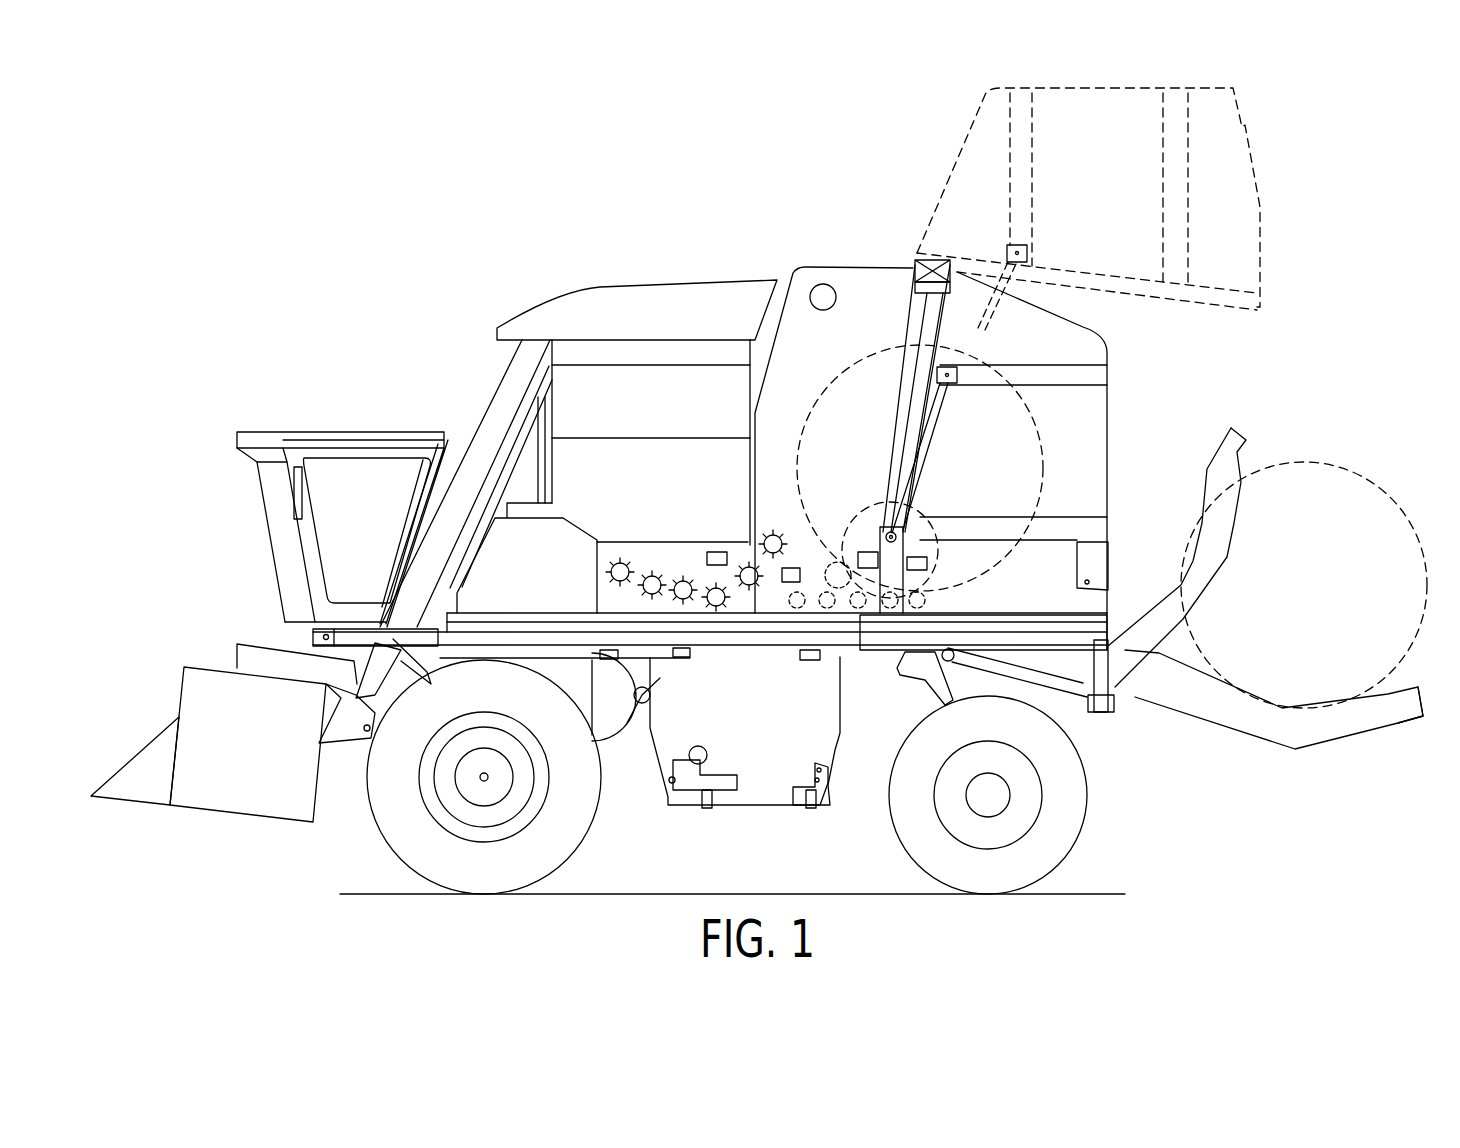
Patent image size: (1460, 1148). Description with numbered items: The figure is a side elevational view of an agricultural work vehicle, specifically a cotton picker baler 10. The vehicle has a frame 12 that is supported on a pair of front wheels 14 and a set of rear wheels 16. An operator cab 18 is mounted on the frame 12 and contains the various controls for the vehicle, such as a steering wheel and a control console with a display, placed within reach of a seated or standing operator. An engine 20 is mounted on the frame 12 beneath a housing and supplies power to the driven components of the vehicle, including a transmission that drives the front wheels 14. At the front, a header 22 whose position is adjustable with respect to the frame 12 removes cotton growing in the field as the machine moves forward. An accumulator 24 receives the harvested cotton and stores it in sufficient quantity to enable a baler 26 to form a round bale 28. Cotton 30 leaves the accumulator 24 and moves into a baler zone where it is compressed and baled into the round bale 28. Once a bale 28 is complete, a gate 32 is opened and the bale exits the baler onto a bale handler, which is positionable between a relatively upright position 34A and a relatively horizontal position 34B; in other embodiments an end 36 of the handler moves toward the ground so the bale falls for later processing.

The cotton picker baler 10 is at (246, 258).
The frame 12 is at (1017, 635).
The front wheels 14 is at (482, 875).
The rear wheels 16 is at (990, 875).
The operator cab 18 is at (268, 428).
The engine 20 is at (680, 737).
The header 22 is at (246, 790).
The accumulator 24 is at (648, 357).
The baler 26 is at (867, 285).
The round bale 28 is at (827, 393).
The cotton 30 is at (653, 570).
The gate 32 is at (1095, 118).
The upright position 34A is at (1220, 460).
The horizontal position 34B is at (1358, 723).
The end 36 is at (1418, 692).